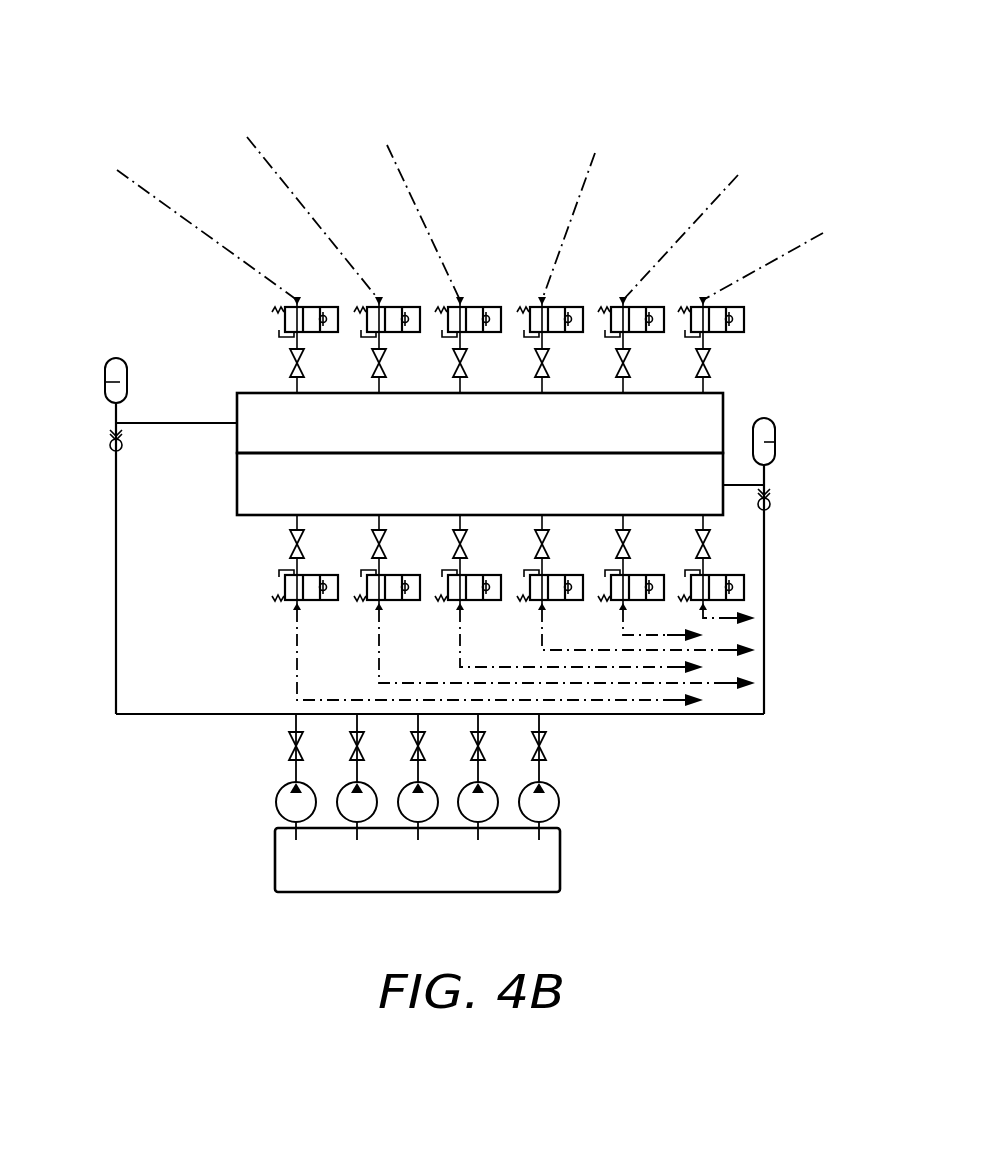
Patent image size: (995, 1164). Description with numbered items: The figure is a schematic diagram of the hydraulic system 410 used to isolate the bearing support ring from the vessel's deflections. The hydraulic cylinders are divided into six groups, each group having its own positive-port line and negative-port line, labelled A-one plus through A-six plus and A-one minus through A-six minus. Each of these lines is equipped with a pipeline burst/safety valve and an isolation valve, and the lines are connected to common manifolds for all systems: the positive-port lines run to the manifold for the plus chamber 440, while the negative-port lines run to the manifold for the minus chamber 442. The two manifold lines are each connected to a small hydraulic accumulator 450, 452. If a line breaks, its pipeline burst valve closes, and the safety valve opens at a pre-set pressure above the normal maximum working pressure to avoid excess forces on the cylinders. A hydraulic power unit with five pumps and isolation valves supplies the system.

The hydraulic system 410 is at (215, 52).
The manifold for + chamber 440 is at (680, 440).
The manifold for − chamber 442 is at (680, 498).
The hydraulic accumulator 450 is at (105, 372).
The hydraulic accumulator 452 is at (768, 443).